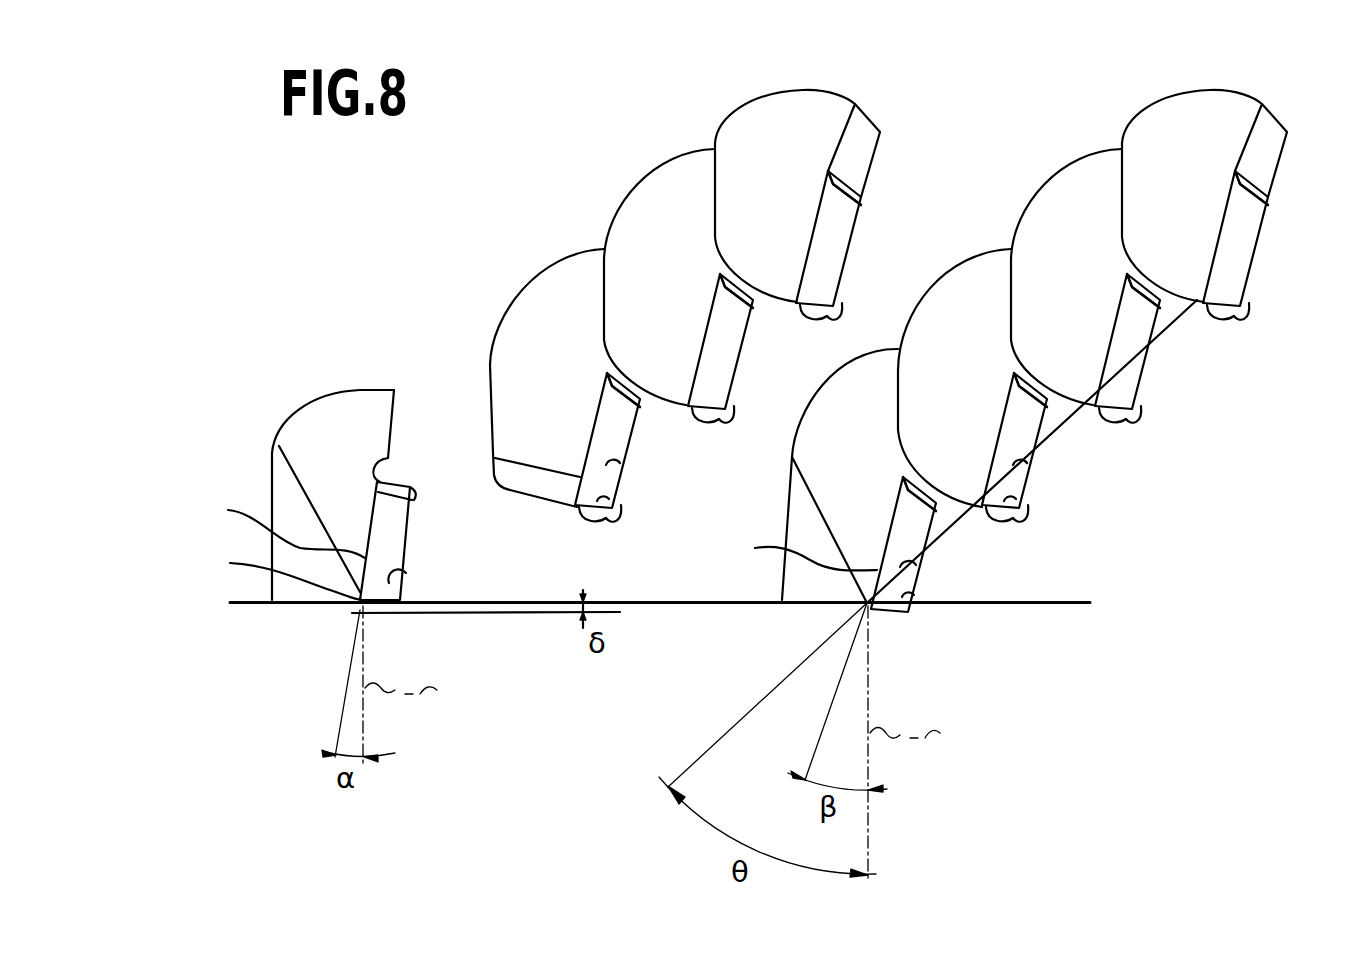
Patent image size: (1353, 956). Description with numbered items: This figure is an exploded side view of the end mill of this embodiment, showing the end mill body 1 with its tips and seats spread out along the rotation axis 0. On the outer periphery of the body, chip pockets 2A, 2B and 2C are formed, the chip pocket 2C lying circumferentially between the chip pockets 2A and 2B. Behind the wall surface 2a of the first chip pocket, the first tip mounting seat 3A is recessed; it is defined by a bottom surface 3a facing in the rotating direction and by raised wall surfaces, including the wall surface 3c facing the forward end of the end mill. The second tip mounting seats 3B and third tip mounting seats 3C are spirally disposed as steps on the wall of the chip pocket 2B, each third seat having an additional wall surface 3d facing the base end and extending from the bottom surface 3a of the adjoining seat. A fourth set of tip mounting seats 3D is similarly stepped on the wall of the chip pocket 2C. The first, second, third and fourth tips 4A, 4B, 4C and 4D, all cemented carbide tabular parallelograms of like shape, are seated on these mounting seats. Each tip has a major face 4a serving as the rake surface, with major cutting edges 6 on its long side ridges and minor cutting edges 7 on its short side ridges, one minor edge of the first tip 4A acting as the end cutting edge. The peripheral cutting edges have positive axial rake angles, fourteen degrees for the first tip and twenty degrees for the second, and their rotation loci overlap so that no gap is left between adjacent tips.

The end mill body 1 is at (984, 145).
The chip pocket 2A is at (327, 440).
The wall surface of chip pocket 2a is at (389, 437).
The chip pocket 2B is at (943, 330).
The chip pocket 2C is at (641, 234).
The first tip mounting seat 3A is at (418, 532).
The second tip mounting seat 3B is at (944, 563).
The third tip mounting seat 3C is at (1262, 261).
The fourth tip mounting seat 3D is at (860, 245).
The bottom surface 3a is at (405, 570).
The wall surface 3c is at (383, 467).
The wall surface 3d is at (596, 500).
The first tip 4A is at (276, 574).
The second tip 4B is at (917, 601).
The third tip 4C is at (1229, 244).
The fourth tip 4D is at (822, 243).
The major face 4a is at (368, 523).
The major cutting edge 6 is at (1005, 464).
The minor cutting edge 7 is at (355, 612).
The axis 0 is at (662, 712).